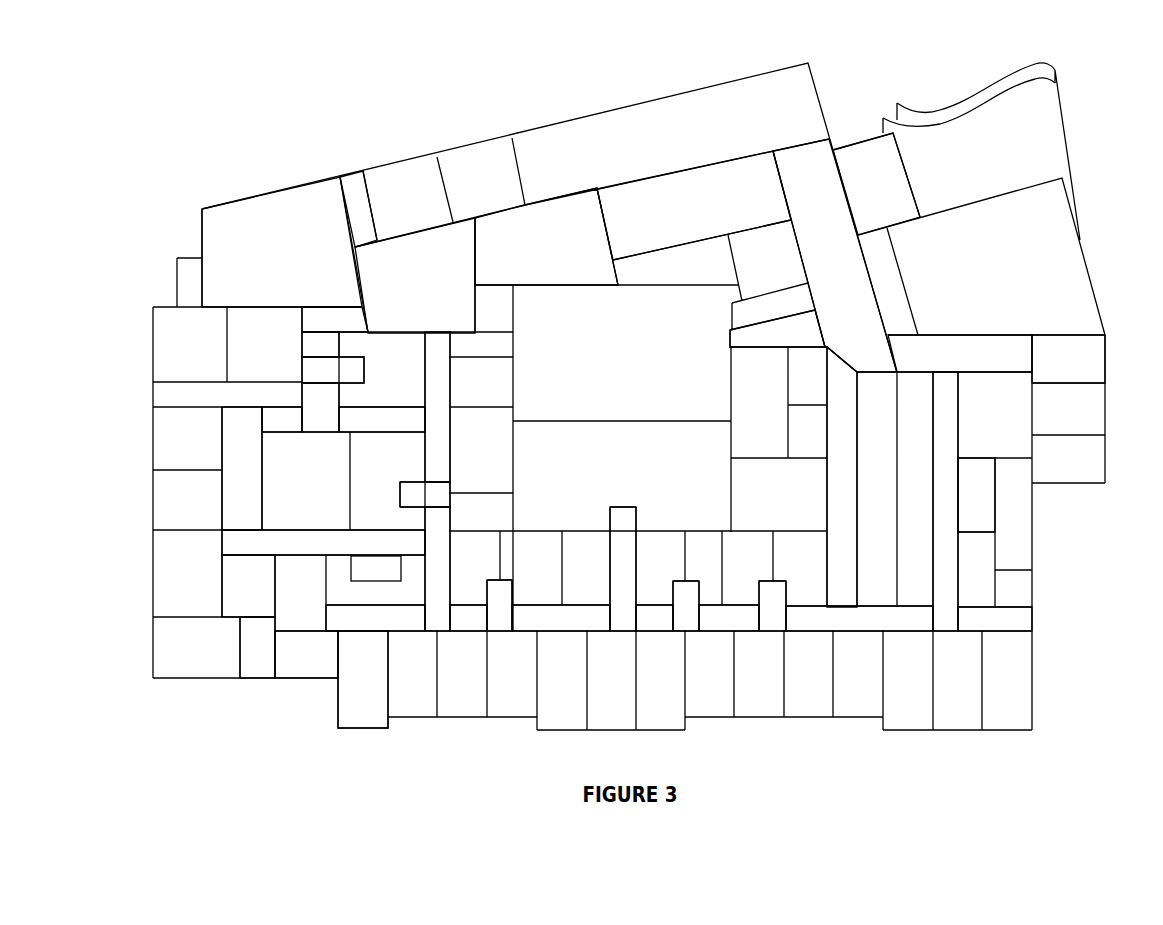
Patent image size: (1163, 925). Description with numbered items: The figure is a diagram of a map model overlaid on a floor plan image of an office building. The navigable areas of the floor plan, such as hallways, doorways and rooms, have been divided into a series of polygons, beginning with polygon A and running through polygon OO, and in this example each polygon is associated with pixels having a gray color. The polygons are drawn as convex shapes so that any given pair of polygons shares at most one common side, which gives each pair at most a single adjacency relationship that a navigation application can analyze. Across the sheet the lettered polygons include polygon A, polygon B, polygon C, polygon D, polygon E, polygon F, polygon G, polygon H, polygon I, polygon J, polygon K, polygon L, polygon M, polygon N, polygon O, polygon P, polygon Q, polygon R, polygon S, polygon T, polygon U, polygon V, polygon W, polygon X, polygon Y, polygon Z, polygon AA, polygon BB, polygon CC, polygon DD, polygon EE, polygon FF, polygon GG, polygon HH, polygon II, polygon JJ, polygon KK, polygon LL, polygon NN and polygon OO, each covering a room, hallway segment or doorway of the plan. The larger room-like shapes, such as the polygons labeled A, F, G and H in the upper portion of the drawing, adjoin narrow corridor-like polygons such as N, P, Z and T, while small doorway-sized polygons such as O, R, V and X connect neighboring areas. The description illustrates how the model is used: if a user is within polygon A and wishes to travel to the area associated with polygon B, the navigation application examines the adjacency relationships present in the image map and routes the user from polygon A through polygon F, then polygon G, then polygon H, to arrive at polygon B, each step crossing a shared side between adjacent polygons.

The polygon A is at (282, 242).
The polygon B is at (835, 255).
The polygon C is at (777, 328).
The polygon D is at (842, 477).
The polygon E is at (358, 209).
The polygon F is at (415, 275).
The polygon G is at (546, 236).
The polygon H is at (694, 205).
The polygon I is at (335, 319).
The polygon J is at (320, 344).
The polygon K is at (333, 370).
The polygon L is at (320, 407).
The polygon M is at (382, 419).
The polygon N is at (437, 407).
The polygon O is at (425, 494).
The polygon P is at (437, 569).
The polygon Q is at (468, 618).
The polygon R is at (499, 605).
The polygon S is at (561, 618).
The polygon T is at (623, 569).
The polygon U is at (654, 618).
The polygon V is at (686, 606).
The polygon W is at (729, 618).
The polygon X is at (772, 606).
The polygon Y is at (859, 618).
The polygon Z is at (945, 501).
The polygon AA is at (995, 619).
The polygon BB is at (976, 495).
The polygon CC is at (960, 353).
The polygon DD is at (1068, 359).
The polygon EE is at (323, 543).
The polygon FF is at (376, 568).
The polygon GG is at (242, 468).
The polygon HH is at (248, 586).
The polygon II is at (257, 647).
The polygon JJ is at (306, 654).
The polygon KK is at (363, 679).
The polygon LL is at (375, 618).
The polygon NN is at (876, 184).
The polygon OO is at (282, 419).